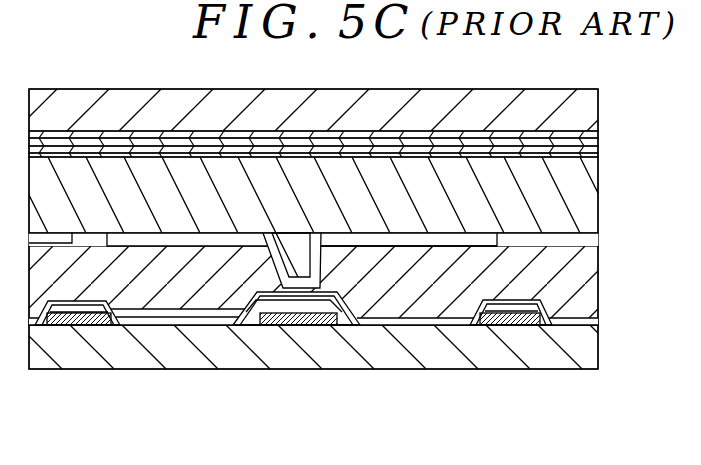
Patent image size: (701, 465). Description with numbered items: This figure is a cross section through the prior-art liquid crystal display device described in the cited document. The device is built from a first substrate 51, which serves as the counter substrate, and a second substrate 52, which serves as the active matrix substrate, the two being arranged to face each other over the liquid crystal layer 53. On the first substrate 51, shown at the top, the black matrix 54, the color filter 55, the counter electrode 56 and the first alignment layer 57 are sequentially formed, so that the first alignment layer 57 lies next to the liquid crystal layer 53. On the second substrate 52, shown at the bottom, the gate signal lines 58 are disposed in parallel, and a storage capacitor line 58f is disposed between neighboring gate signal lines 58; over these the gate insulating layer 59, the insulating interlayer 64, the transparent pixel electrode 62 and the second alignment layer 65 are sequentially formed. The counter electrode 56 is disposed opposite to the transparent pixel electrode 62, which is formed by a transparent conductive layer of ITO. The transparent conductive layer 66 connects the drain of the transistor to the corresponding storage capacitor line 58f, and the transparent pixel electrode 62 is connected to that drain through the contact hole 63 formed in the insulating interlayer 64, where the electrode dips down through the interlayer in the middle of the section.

The first substrate 51 is at (447, 97).
The second substrate 52 is at (590, 340).
The liquid crystal layer 53 is at (394, 158).
The black matrix 54 is at (562, 131).
The color filter 55 is at (182, 137).
The counter electrode 56 is at (110, 142).
The first alignment layer 57 is at (598, 153).
The gate signal line 58 is at (85, 328).
The storage capacitor line 58f is at (300, 328).
The gate insulating layer 59 is at (140, 328).
The transparent pixel electrode 62 is at (445, 248).
The contact hole 63 is at (298, 236).
The insulating interlayer 64 is at (590, 288).
The second alignment layer 65 is at (593, 240).
The transparent conductive layer 66 is at (200, 328).